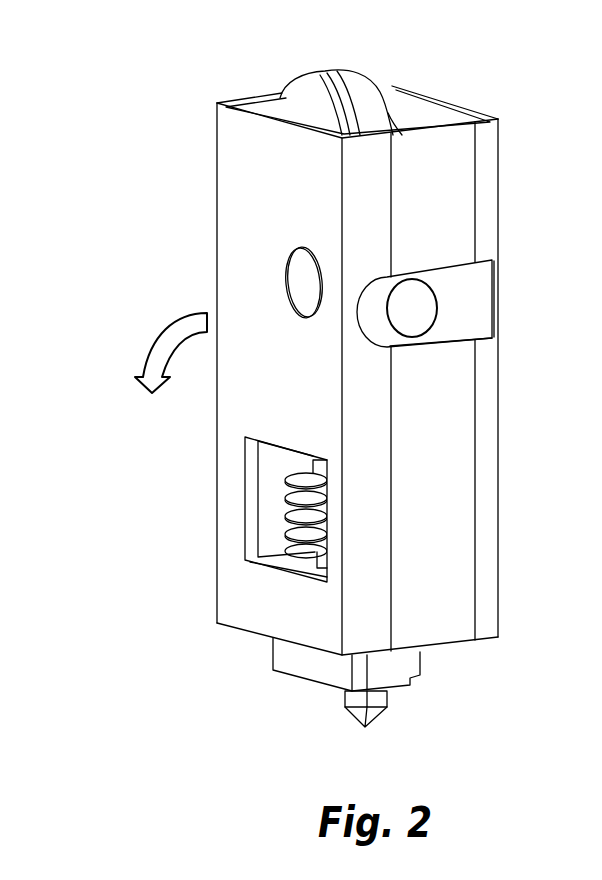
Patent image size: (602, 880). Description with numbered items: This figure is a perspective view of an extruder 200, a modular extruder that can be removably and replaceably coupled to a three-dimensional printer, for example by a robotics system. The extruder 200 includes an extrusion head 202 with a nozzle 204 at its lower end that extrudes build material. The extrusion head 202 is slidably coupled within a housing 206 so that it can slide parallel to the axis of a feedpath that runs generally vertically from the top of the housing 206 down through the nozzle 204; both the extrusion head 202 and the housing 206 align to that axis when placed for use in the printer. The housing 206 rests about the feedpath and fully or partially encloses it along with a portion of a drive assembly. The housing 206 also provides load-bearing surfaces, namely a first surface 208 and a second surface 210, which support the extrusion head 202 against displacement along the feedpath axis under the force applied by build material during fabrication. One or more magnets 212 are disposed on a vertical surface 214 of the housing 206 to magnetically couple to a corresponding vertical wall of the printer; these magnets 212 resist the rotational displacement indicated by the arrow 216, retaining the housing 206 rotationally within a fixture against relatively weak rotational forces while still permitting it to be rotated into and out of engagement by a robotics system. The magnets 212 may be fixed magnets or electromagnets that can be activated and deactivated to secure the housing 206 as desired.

The extruder 200 is at (120, 211).
The extrusion head 202 is at (343, 705).
The nozzle 204 is at (365, 728).
The housing 206 is at (498, 492).
The first surface 208 is at (464, 267).
The second surface 210 is at (468, 647).
The magnet 212 is at (383, 317).
The vertical surface 214 is at (463, 305).
The arrow 216 is at (160, 332).